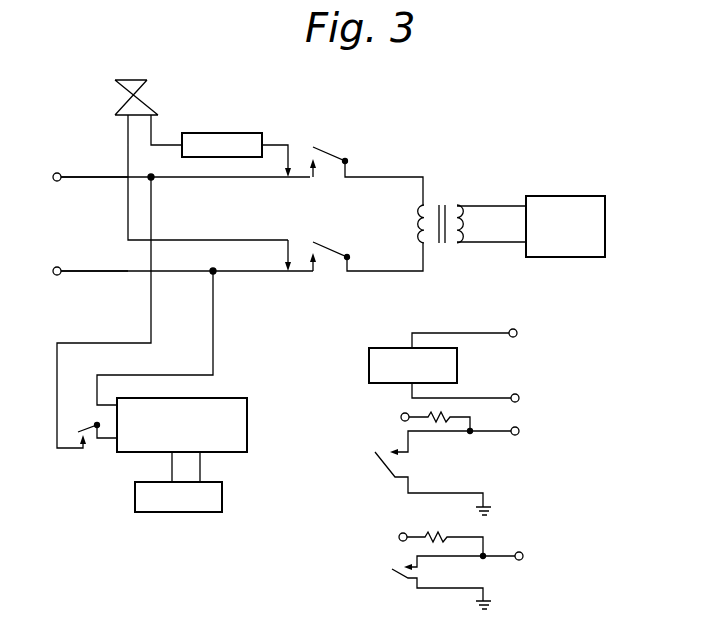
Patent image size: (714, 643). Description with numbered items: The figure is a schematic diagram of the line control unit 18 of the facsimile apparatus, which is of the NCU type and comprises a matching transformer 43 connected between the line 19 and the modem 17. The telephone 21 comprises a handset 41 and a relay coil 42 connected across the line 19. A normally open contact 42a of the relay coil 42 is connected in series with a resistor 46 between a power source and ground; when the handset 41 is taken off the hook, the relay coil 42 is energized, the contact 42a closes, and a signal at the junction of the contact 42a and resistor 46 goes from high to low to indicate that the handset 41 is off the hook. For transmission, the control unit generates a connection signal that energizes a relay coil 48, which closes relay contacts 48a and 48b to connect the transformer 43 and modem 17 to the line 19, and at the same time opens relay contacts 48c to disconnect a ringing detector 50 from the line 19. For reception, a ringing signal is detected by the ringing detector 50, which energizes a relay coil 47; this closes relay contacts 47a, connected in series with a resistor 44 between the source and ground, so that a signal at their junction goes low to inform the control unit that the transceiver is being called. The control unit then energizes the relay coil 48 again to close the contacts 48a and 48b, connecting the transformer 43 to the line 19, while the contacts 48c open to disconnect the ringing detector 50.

The modem 17 is at (593, 196).
The line control unit 18 is at (486, 145).
The line 19 is at (100, 180).
The telephone 21 is at (60, 98).
The handset 41 is at (137, 80).
The relay coil 42 is at (220, 132).
The normally open contact 42a is at (382, 464).
The matching transformer 43 is at (443, 252).
The resistor 44 is at (448, 529).
The resistor 46 is at (435, 408).
The relay coil 47 is at (173, 513).
The relay contacts 47a is at (393, 581).
The relay coil 48 is at (386, 346).
The relay contacts 48a is at (334, 147).
The relay contacts 48b is at (333, 270).
The relay contacts 48c is at (90, 441).
The ringing detector 50 is at (213, 398).